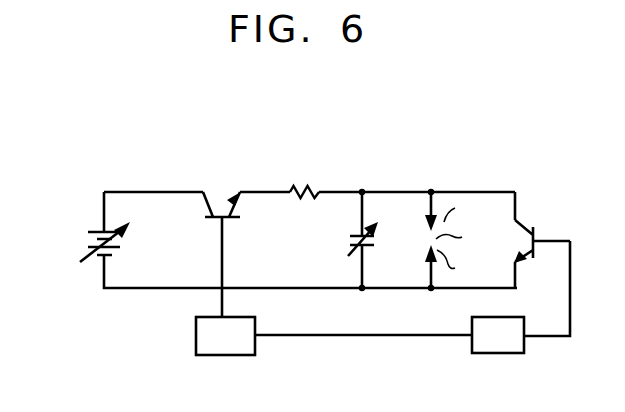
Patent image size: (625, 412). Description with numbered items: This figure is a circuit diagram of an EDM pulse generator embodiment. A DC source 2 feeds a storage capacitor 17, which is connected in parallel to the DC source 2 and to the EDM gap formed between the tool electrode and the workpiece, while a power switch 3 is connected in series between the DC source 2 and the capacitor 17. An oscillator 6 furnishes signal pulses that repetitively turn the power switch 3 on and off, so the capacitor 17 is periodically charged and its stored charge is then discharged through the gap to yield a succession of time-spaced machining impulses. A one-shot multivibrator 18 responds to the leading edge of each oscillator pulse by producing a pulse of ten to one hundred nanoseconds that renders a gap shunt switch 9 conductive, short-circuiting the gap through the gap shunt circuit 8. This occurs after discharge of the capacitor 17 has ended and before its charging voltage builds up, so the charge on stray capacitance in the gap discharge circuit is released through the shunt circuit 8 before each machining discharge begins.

The DC source 2 is at (85, 240).
The power switch 3 is at (227, 197).
The oscillator 6 is at (196, 320).
The gap shunt circuit 8 is at (490, 196).
The gap shunt switch 9 is at (527, 218).
The storage capacitor 17 is at (345, 245).
The one-shot multivibrator 18 is at (524, 352).